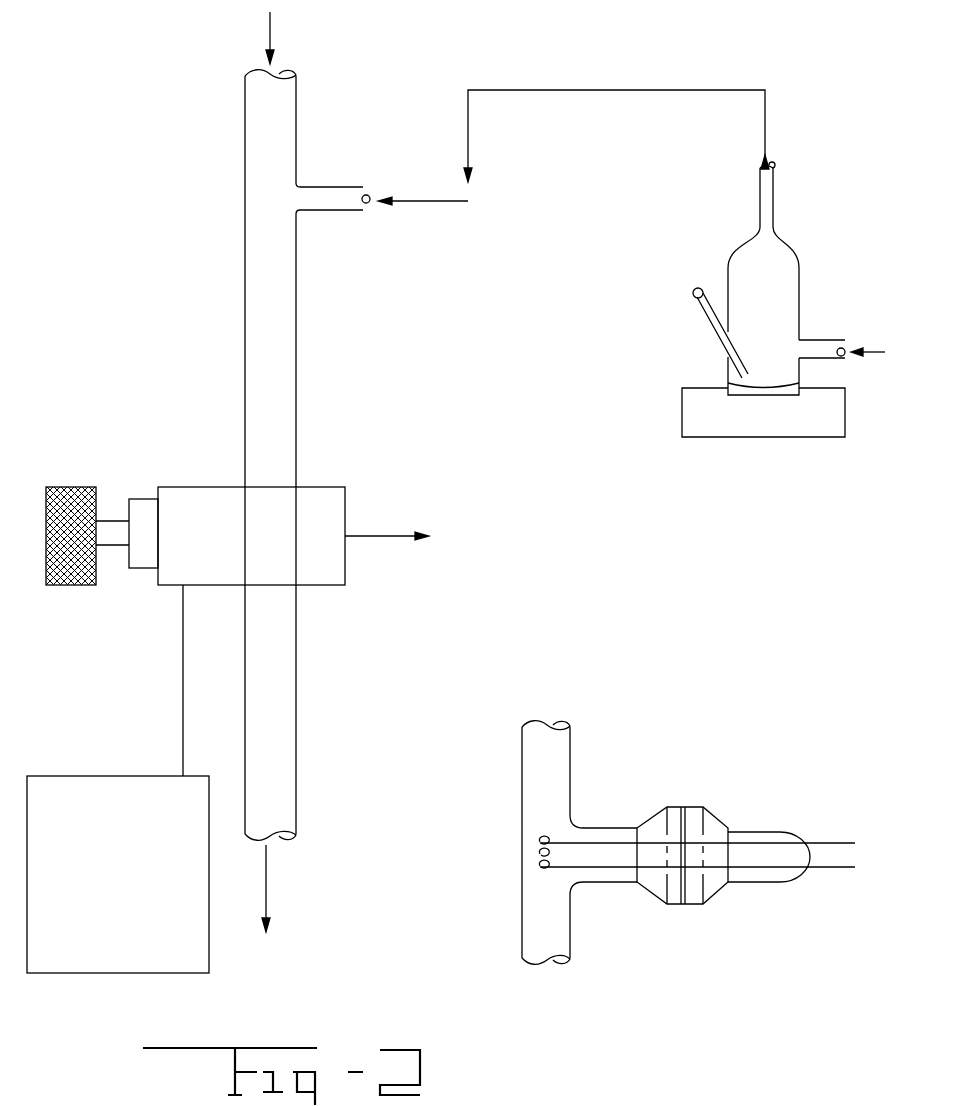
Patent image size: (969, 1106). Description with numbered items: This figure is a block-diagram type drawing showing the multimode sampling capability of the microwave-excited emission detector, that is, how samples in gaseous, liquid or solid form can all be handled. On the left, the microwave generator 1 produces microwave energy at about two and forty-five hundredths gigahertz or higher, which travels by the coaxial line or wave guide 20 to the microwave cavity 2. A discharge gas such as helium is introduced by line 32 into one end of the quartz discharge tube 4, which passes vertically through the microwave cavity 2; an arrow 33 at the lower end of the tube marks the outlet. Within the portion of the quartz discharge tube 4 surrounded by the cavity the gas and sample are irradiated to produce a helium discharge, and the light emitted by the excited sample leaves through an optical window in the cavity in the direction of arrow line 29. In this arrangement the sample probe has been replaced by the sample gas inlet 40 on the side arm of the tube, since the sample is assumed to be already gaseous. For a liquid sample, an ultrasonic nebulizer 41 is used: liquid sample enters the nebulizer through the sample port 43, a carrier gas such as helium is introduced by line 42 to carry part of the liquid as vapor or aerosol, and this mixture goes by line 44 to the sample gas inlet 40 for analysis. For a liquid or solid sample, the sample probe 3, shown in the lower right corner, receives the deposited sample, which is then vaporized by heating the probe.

The microwave generator 1 is at (108, 776).
The microwave cavity 2 is at (182, 487).
The sample probe 3 is at (548, 843).
The quartz discharge tube 4 is at (298, 413).
The coaxial line or wave guide 20 is at (183, 668).
The arrow line 29 is at (373, 533).
The line 32 is at (272, 36).
The gas outlet arrow from quartz tube 33 is at (268, 892).
The sample gas inlet 40 is at (413, 204).
The ultrasonic nebulizer 41 is at (779, 437).
The line 42 is at (868, 352).
The sample port 43 is at (694, 290).
The line 44 is at (601, 92).